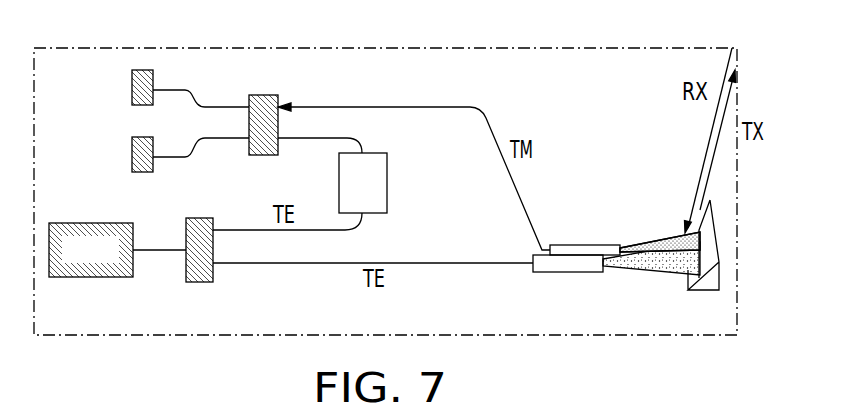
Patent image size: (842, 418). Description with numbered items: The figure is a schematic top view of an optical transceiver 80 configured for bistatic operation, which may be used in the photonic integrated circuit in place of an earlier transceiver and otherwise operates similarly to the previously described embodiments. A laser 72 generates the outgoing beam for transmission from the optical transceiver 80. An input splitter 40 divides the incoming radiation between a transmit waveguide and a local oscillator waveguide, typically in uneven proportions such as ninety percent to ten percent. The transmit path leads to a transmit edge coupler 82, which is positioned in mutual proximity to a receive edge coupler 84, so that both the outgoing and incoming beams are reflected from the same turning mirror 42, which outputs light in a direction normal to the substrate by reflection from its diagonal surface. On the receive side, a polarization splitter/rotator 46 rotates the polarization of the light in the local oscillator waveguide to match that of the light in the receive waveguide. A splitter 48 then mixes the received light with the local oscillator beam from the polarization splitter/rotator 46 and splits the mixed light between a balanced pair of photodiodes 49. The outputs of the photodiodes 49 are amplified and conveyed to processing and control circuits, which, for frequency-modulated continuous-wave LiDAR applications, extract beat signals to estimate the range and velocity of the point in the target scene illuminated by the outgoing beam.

The optical transceiver 80 is at (62, 48).
The laser 72 is at (90, 223).
The input splitter 40 is at (186, 232).
The polarization splitter/rotator (PSR) 46 is at (387, 192).
The splitter 48 is at (262, 155).
The balanced pair of photodiodes 49 is at (132, 150).
The receive edge coupler 84 is at (586, 245).
The transmit edge coupler 82 is at (558, 272).
The turning mirror 42 is at (713, 282).